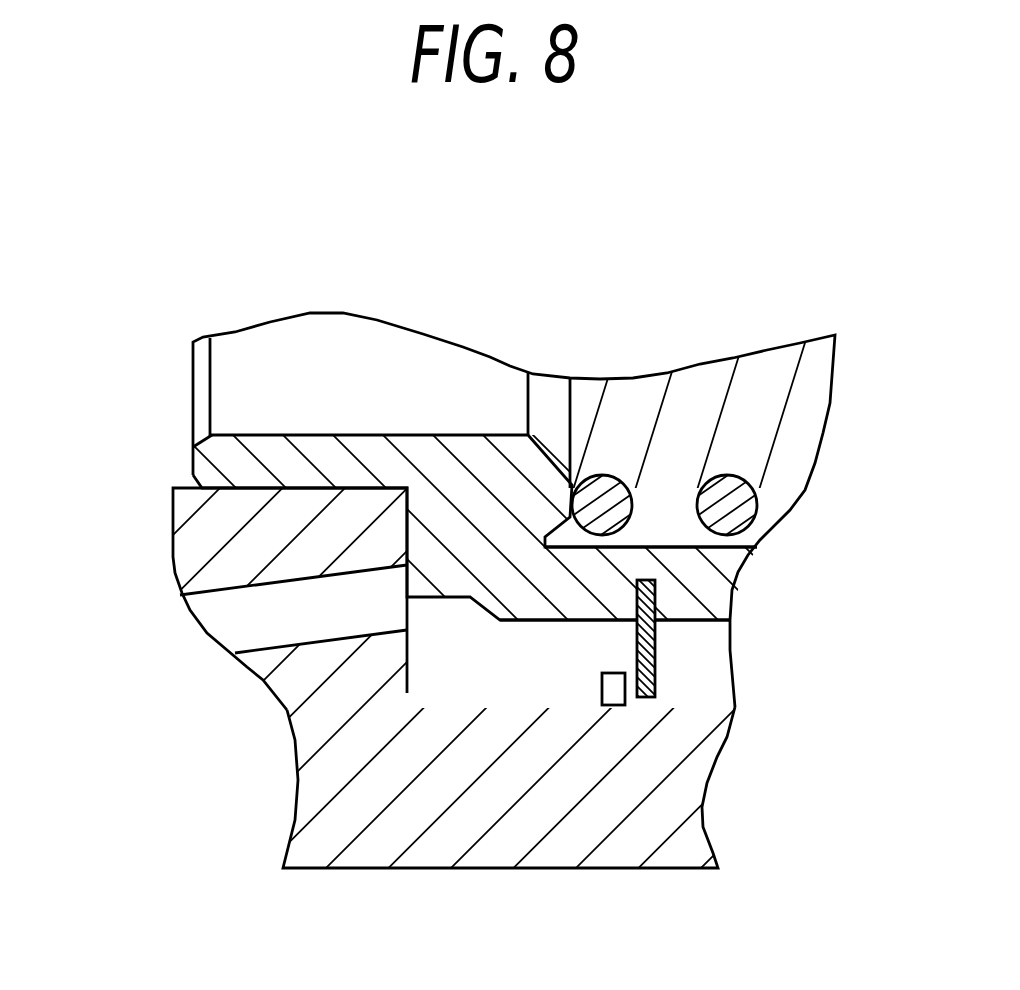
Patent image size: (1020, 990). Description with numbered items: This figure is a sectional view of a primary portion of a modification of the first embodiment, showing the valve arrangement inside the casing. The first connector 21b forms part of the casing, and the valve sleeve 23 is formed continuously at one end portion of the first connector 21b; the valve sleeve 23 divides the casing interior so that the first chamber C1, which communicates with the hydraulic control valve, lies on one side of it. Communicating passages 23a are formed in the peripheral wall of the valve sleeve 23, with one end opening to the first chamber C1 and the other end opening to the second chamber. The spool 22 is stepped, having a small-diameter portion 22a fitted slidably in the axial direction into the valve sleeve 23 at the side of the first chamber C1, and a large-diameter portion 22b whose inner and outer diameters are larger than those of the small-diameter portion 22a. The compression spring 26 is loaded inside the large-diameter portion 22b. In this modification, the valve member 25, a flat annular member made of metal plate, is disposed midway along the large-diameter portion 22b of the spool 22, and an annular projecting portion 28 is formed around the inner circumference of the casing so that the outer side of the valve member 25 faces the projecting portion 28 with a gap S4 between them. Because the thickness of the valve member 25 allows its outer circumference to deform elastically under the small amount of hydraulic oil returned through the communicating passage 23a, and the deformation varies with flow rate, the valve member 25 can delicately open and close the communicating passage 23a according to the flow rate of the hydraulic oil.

The spool 22 is at (446, 368).
The small-diameter portion 22a is at (293, 467).
The large-diameter portion 22b is at (707, 580).
The valve sleeve 23 is at (222, 560).
The communicating passage 23a is at (253, 618).
The valve member 25 is at (667, 632).
The compression spring 26 is at (740, 515).
The projecting portion 28 is at (605, 688).
The first connector 21b is at (472, 818).
The first chamber C1 is at (717, 657).
The gap S4 is at (625, 707).